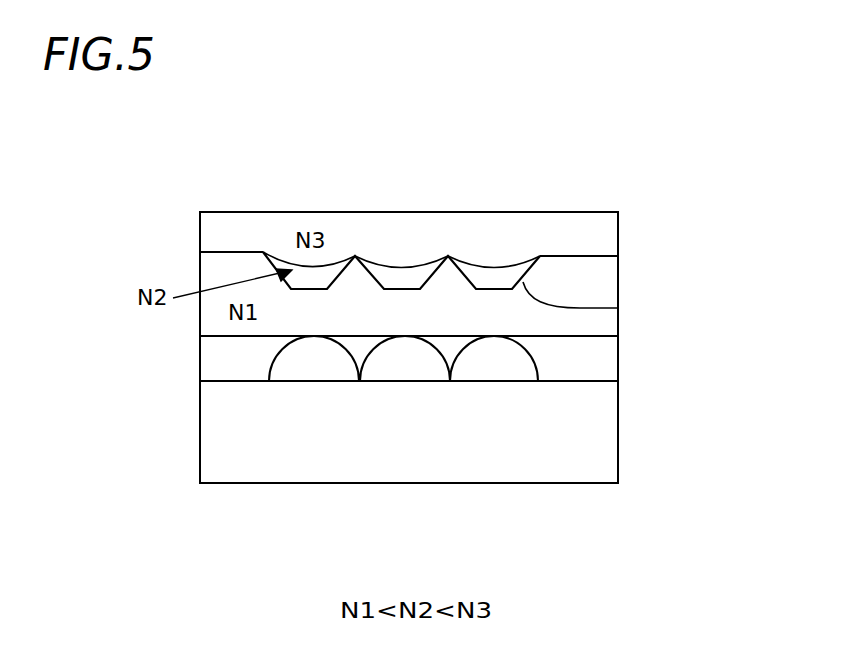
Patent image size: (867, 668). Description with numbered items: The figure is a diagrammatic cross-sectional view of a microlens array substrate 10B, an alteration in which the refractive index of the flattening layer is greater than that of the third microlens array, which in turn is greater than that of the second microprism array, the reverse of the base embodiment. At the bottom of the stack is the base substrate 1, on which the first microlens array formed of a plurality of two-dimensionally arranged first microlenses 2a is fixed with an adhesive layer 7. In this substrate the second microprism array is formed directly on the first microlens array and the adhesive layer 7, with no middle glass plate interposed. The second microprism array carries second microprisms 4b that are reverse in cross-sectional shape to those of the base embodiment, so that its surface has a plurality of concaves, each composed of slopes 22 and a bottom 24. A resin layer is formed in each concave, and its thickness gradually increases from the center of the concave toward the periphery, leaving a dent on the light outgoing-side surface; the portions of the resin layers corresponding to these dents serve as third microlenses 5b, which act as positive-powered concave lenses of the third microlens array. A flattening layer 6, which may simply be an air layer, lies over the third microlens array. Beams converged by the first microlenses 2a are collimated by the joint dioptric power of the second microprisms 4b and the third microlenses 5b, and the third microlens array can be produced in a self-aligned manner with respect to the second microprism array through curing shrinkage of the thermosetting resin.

The microlens array substrate 10B is at (141, 195).
The flattening layer 6 is at (540, 243).
The second microprisms 4b is at (592, 295).
The third microlenses 5b is at (498, 282).
The bottom 24 is at (478, 289).
The slopes 22 is at (618, 308).
The adhesive layer 7 is at (600, 358).
The first microlenses 2a is at (497, 372).
The base substrate 1 is at (568, 432).